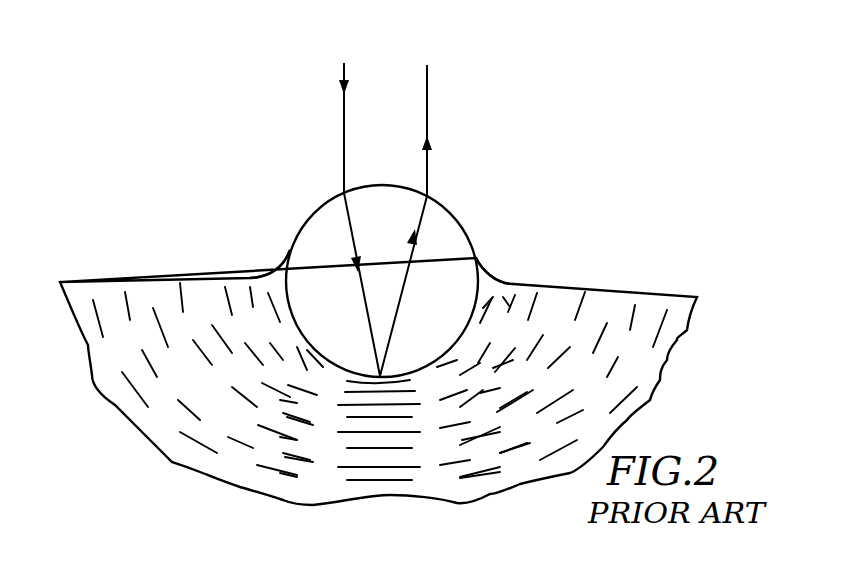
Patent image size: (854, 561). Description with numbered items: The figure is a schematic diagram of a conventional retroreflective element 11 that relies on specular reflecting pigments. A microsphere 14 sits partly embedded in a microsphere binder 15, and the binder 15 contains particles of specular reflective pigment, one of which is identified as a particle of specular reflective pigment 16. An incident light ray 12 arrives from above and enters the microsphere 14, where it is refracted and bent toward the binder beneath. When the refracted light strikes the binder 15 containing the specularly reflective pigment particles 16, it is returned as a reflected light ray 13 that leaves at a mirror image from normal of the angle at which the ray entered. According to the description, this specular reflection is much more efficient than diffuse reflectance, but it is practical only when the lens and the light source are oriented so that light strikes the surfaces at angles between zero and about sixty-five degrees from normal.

The retroreflective element 11 is at (523, 212).
The incident light ray 12 is at (342, 125).
The reflected light ray 13 is at (430, 115).
The microsphere 14 is at (453, 213).
The microsphere binder 15 is at (593, 310).
The particle of specular reflective pigment 16 is at (540, 283).